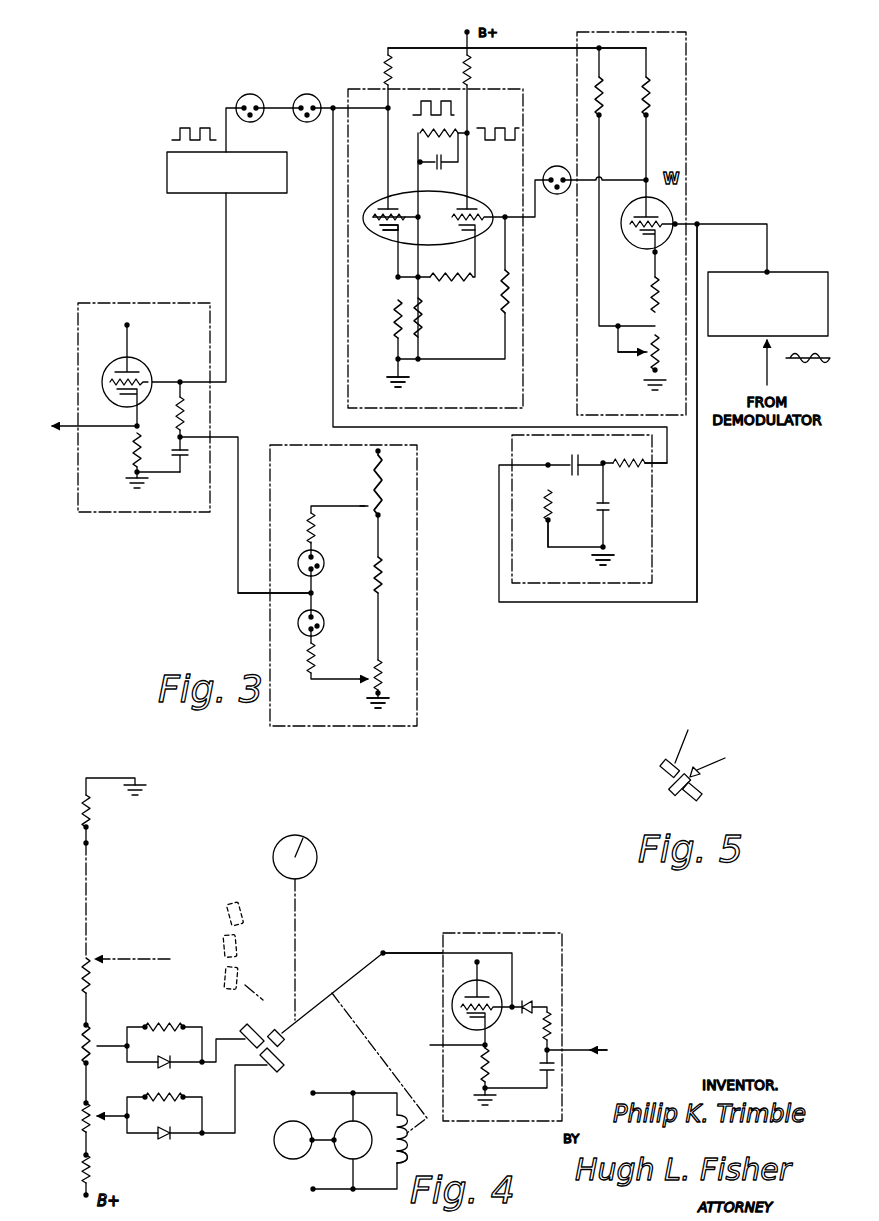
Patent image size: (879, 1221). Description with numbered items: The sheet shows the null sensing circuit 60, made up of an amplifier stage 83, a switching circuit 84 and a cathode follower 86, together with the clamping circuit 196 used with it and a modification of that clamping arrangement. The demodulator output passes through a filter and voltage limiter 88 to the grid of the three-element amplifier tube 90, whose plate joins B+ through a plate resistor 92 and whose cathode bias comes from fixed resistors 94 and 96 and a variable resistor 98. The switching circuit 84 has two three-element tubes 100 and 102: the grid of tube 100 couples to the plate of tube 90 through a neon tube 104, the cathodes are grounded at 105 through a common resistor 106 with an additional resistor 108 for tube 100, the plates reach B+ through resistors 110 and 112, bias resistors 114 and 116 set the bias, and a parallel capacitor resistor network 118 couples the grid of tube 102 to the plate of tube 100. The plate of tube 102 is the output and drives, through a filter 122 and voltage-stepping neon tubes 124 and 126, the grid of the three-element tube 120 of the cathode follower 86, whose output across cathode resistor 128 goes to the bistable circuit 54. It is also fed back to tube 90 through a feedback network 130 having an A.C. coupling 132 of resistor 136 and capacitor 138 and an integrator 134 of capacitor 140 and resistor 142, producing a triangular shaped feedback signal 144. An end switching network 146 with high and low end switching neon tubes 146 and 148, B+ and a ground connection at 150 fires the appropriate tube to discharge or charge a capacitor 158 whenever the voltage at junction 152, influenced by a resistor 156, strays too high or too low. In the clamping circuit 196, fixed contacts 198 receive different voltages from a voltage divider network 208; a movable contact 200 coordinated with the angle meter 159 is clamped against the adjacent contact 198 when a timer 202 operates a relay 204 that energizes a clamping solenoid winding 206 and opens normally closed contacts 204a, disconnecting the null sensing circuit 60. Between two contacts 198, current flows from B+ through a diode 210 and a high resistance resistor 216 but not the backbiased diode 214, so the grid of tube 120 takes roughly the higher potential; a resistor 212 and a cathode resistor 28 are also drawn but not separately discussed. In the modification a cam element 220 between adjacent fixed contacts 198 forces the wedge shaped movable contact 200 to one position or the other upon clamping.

In FIG. 3, the neon tube 124 is at (250, 96).
In FIG. 3, the neon tube 126 is at (307, 94).
In FIG. 3, the filter 122 is at (257, 194).
In FIG. 3, the switching circuit 84 is at (363, 81).
In FIG. 3, the resistor 112 is at (392, 78).
In FIG. 3, the resistor 110 is at (469, 78).
In FIG. 3, the null sensing circuit 60 is at (512, 46).
In FIG. 3, the parallel capacitor resistor network 118 is at (438, 127).
In FIG. 3, the three-element tube 100 is at (478, 238).
In FIG. 3, the three-element tube 102 is at (376, 246).
In FIG. 3, the additional resistor 108 is at (445, 280).
In FIG. 3, the common resistor 106 is at (395, 320).
In FIG. 3, the bias resistor 116 is at (421, 323).
In FIG. 3, the bias resistor 114 is at (502, 310).
In FIG. 3, the ground 105 is at (410, 382).
In FIG. 3, the neon tube 104 is at (559, 196).
In FIG. 3, the amplifier stage 83 is at (692, 78).
In FIG. 3, the fixed resistor 94 is at (602, 96).
In FIG. 3, the plate resistor 92 is at (648, 100).
In FIG. 3, the three-element amplifier tube 90 is at (632, 207).
In FIG. 3, the fixed resistor 96 is at (652, 304).
In FIG. 3, the variable resistor 98 is at (658, 354).
In FIG. 3, the filter and voltage limiter 88 is at (792, 272).
In FIG. 3, the triangular shaped feedback signal 144 is at (700, 464).
In FIG. 3, the feedback network 130 is at (654, 542).
In FIG. 3, the capacitor 138 is at (576, 465).
In FIG. 3, the resistor 142 is at (626, 466).
In FIG. 3, the A.C. coupling 132 is at (547, 480).
In FIG. 3, the resistor 136 is at (546, 532).
In FIG. 3, the integrator 134 is at (612, 504).
In FIG. 3, the capacitor 140 is at (606, 524).
In FIG. 3, the cathode follower 86 is at (124, 299).
In FIG. 4, the cathode follower 86 is at (500, 928).
In FIG. 3, the three-element tube 120 is at (148, 366).
In FIG. 4, the three-element tube 120 is at (456, 997).
In FIG. 3, the resistor 156 is at (175, 420).
In FIG. 4, the resistor 156 is at (540, 1032).
In FIG. 3, the cathode resistor 128 is at (128, 462).
In FIG. 3, the capacitor 158 is at (182, 463).
In FIG. 4, the capacitor 158 is at (540, 1069).
In FIG. 3, the bistable circuit 54 is at (70, 437).
In FIG. 4, the bistable circuit 54 is at (443, 1045).
In FIG. 3, the end switching network 146 is at (423, 552).
In FIG. 3, the low end switching neon tube 148 is at (323, 548).
In FIG. 3, the junction 152 is at (320, 595).
In FIG. 3, the ground connection 150 is at (365, 706).
In FIG. 4, the voltage divider network 208 is at (92, 1019).
In FIG. 4, the resistor 216 is at (163, 1027).
In FIG. 4, the diode 214 is at (157, 1066).
In FIG. 4, the resistor 212 is at (173, 1097).
In FIG. 4, the diode 210 is at (171, 1136).
In FIG. 4, the angle meter 159 is at (317, 848).
In FIG. 4, the fixed contacts 198 is at (280, 1048).
In FIG. 5, the fixed contacts 198 is at (700, 792).
In FIG. 4, the movable contact 200 is at (349, 984).
In FIG. 5, the movable contact 200 is at (723, 764).
In FIG. 4, the clamping circuit 196 is at (367, 958).
In FIG. 4, the normally closed contacts 204a is at (523, 1001).
In FIG. 4, the resistor 28 is at (482, 1076).
In FIG. 4, the relay 204 is at (397, 1128).
In FIG. 4, the clamping solenoid winding 206 is at (400, 1160).
In FIG. 4, the timer 202 is at (299, 1156).
In FIG. 5, the cam element 220 is at (672, 785).